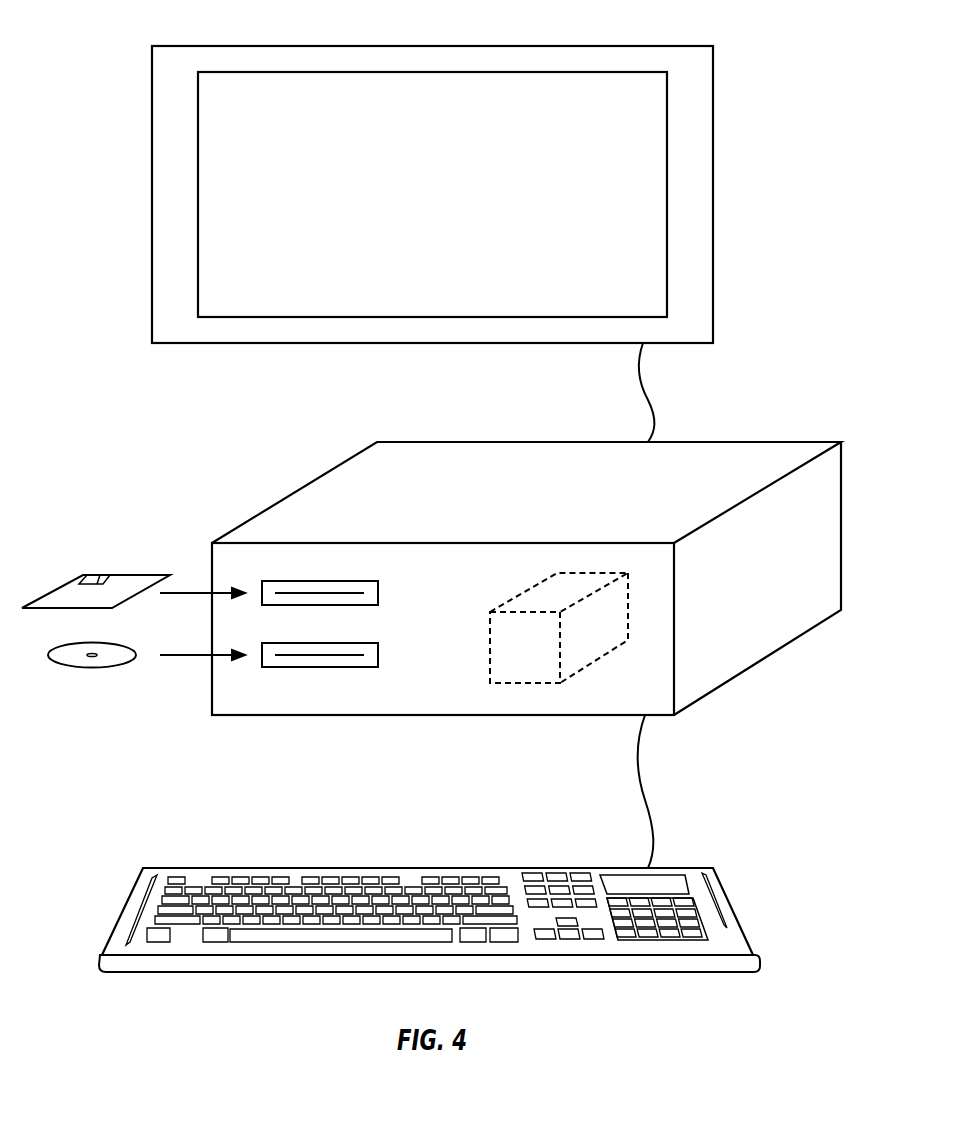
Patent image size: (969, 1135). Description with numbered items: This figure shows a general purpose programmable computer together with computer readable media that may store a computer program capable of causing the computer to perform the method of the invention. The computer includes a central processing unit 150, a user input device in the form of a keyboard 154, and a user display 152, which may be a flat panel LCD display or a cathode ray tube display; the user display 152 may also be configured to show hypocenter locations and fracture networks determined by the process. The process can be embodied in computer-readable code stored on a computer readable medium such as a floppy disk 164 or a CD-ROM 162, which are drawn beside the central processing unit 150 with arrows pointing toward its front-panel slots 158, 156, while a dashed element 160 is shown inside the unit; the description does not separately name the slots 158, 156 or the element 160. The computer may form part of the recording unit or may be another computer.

The central processing unit 150 is at (770, 442).
The user display 152 is at (651, 46).
The keyboard 154 is at (700, 868).
The disk drive slot 156 is at (344, 643).
The disk drive slot 158 is at (344, 580).
The memory / storage unit 160 is at (490, 612).
The CD-ROM 162 is at (128, 647).
The floppy disk 164 is at (128, 575).